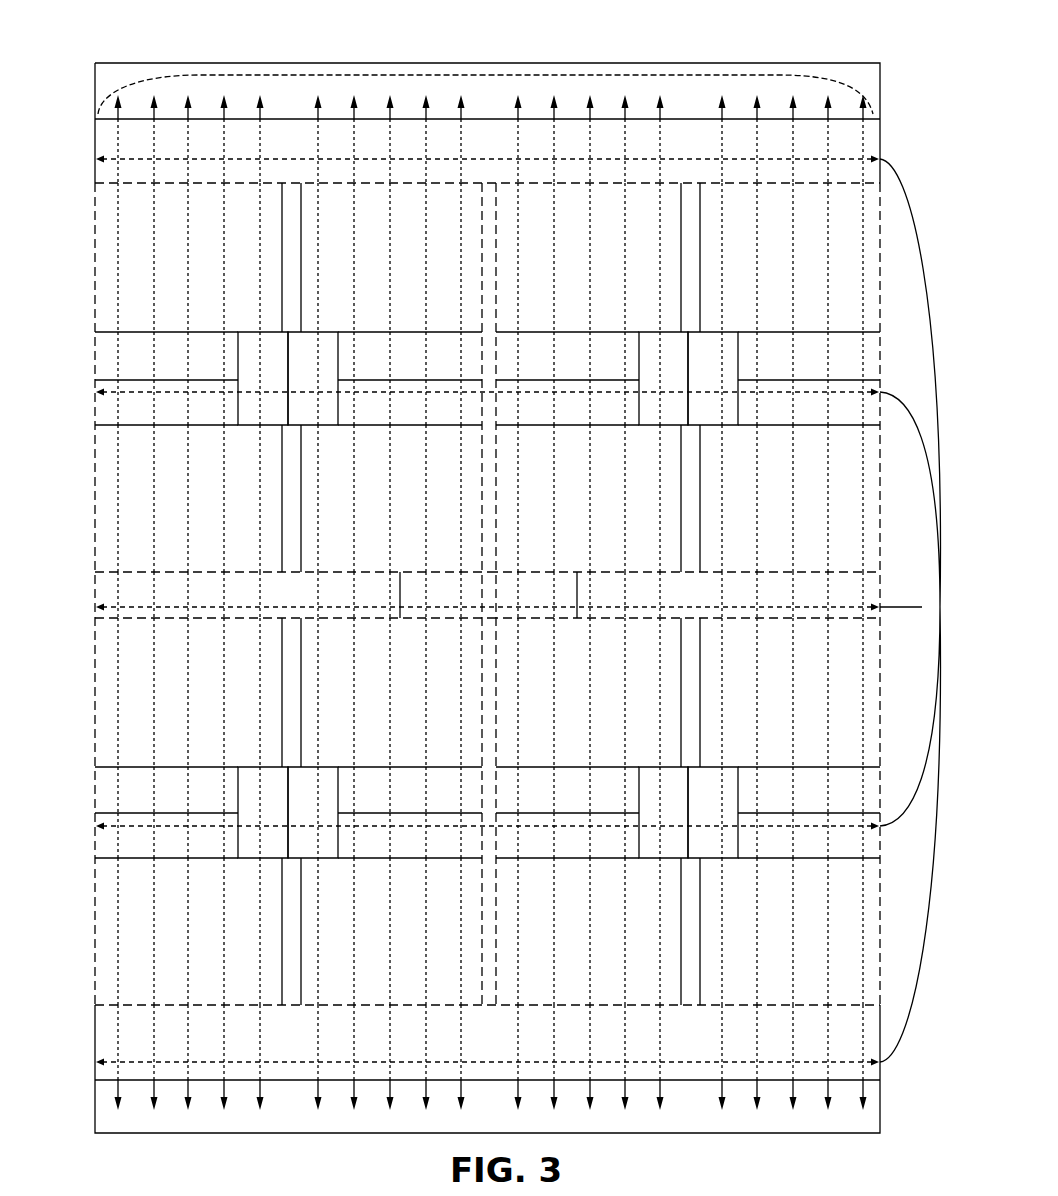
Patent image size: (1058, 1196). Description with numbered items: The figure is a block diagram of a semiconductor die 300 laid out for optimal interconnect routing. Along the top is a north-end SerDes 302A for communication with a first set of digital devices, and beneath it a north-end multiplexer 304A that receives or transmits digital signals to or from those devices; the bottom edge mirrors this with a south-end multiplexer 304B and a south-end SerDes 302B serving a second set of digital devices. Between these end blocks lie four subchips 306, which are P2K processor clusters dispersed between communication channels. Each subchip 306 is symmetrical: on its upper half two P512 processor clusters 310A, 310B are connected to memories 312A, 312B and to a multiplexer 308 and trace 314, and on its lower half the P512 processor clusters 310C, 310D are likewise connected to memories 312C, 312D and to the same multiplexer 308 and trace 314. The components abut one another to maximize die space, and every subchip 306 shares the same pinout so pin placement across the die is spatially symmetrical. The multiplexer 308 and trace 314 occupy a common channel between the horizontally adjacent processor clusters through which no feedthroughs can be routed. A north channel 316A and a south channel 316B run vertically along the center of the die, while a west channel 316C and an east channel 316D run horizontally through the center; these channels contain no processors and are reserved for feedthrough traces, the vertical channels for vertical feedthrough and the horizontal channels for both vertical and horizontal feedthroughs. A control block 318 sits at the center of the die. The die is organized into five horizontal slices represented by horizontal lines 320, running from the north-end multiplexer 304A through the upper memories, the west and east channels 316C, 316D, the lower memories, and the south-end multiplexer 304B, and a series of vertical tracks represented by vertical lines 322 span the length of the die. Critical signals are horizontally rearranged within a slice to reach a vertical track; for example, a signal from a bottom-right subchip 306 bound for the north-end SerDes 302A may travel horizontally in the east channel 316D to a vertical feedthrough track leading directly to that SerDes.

The semiconductor die 300 is at (471, 36).
The north-end Serializer/Deserializer (SerDes) 302A is at (467, 103).
The south-end SerDes 302B is at (467, 1115).
The north-end multiplexer 304A is at (467, 153).
The south-end multiplexer 304B is at (467, 1050).
The subchip 306 is at (93, 276).
The multiplexer 308 is at (296, 387).
The P512 processor cluster 310A is at (167, 268).
The P512 processor cluster 310B is at (371, 268).
The P512 processor cluster 310C is at (167, 508).
The P512 processor cluster 310D is at (371, 508).
The memory 312A is at (146, 366).
The memory 312B is at (389, 366).
The memory 312C is at (146, 413).
The memory 312D is at (389, 413).
The trace 314 is at (246, 387).
The north channel 316A is at (490, 183).
The south channel 316B is at (487, 1007).
The west channel 316C is at (227, 603).
The east channel 316D is at (706, 605).
The control block 318 is at (472, 605).
The horizontal lines 320 is at (525, 611).
The vertical lines 322 is at (333, 76).